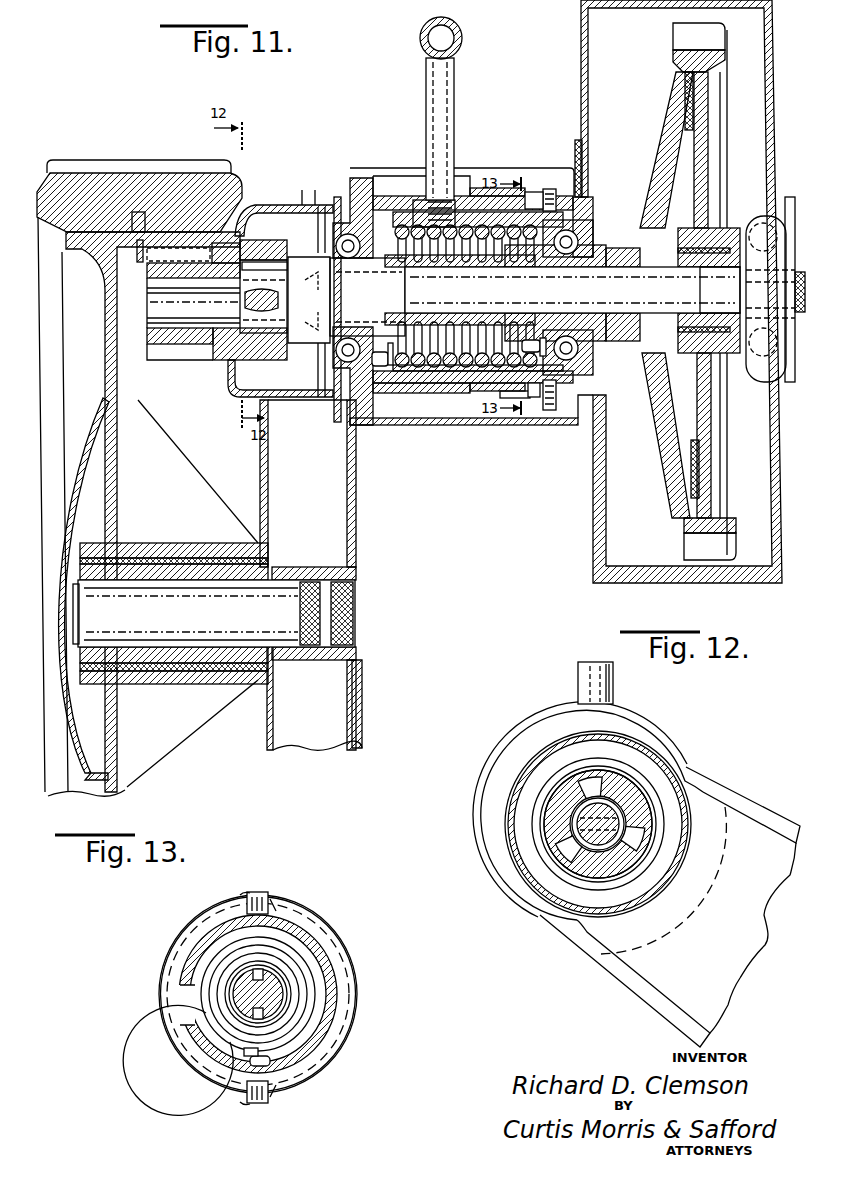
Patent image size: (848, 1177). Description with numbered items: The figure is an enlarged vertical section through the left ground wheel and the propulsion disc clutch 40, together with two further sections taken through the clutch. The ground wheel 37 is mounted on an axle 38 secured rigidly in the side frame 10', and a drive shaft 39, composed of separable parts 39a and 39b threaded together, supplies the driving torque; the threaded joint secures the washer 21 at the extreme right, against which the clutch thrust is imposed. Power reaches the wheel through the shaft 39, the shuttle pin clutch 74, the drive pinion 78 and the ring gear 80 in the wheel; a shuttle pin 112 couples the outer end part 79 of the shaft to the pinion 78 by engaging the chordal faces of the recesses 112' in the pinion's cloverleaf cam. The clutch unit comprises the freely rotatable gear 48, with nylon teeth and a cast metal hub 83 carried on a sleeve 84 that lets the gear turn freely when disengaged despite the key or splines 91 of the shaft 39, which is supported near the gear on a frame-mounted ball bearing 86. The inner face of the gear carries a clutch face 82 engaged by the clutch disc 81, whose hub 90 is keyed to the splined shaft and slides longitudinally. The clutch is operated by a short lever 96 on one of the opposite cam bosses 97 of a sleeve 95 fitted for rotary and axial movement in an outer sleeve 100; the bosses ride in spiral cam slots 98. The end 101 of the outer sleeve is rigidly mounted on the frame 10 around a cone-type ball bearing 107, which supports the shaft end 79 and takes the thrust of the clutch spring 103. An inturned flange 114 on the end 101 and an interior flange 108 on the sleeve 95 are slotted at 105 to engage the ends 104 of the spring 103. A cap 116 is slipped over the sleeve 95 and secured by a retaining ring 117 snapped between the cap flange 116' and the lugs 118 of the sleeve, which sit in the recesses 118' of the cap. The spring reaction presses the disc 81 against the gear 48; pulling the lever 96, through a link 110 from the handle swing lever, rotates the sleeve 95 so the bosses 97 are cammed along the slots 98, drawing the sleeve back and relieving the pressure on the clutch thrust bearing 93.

In FIG. 11, the frame 10 is at (541, 291).
In FIG. 11, the side frame 10' is at (339, 697).
In FIG. 12, the side frame 10' is at (671, 906).
In FIG. 11, the washer 21 is at (768, 363).
In FIG. 11, the ground wheel 37 is at (75, 185).
In FIG. 11, the axle 38 is at (280, 605).
In FIG. 11, the drive shaft 39 is at (648, 243).
In FIG. 11, the shaft part 39a is at (800, 315).
In FIG. 11, the shaft part 39b is at (622, 341).
In FIG. 13, the shaft part 39b is at (285, 1002).
In FIG. 11, the propulsion disc clutch 40 is at (478, 470).
In FIG. 12, the propulsion disc clutch 40 is at (530, 725).
In FIG. 13, the propulsion disc clutch 40 is at (343, 1092).
In FIG. 11, the gear 48 is at (686, 36).
In FIG. 11, the overrunning clutch 74 is at (271, 370).
In FIG. 12, the overrunning clutch 74 is at (533, 838).
In FIG. 11, the drive pinion 78 is at (178, 350).
In FIG. 12, the drive pinion 78 is at (639, 785).
In FIG. 11, the outer end part of shaft 79 is at (265, 280).
In FIG. 12, the outer end part of shaft 79 is at (563, 800).
In FIG. 11, the ring gear 80 is at (137, 255).
In FIG. 11, the clutch disc 81 is at (660, 165).
In FIG. 11, the clutch face 82 is at (695, 104).
In FIG. 11, the hub 83 is at (708, 238).
In FIG. 11, the sleeve 84 is at (716, 303).
In FIG. 11, the ball bearing 86 is at (770, 236).
In FIG. 11, the hub of disc member 90 is at (612, 246).
In FIG. 13, the hub of disc member 90 is at (240, 977).
In FIG. 11, the key or splines 91 is at (626, 272).
In FIG. 13, the key or splines 91 is at (248, 1000).
In FIG. 11, the clutch thrust bearing 93 is at (568, 340).
In FIG. 11, the sleeve 95 is at (470, 392).
In FIG. 13, the sleeve 95 is at (313, 940).
In FIG. 11, the lever 96 is at (446, 125).
In FIG. 12, the lever 96 is at (585, 672).
In FIG. 11, the cam boss 97 is at (461, 194).
In FIG. 11, the cam slot 98 is at (428, 200).
In FIG. 11, the outer sleeve 100 is at (395, 186).
In FIG. 11, the end of outer sleeve 101 is at (341, 420).
In FIG. 12, the end of outer sleeve 101 is at (509, 757).
In FIG. 11, the clutch spring 103 is at (442, 328).
In FIG. 13, the clutch spring 103 is at (315, 967).
In FIG. 11, the spring end 104 is at (383, 352).
In FIG. 13, the spring end 104 is at (246, 1062).
In FIG. 11, the slot 105 is at (385, 345).
In FIG. 13, the slot 105 is at (248, 1060).
In FIG. 11, the cone-type ball bearing 107 is at (336, 352).
In FIG. 11, the interior flange 108 is at (537, 258).
In FIG. 13, the interior flange 108 is at (212, 1035).
In FIG. 11, the link 110 is at (420, 40).
In FIG. 11, the shuttle pin 112 is at (233, 297).
In FIG. 12, the shuttle pin 112 is at (632, 824).
In FIG. 11, the recess 112' is at (265, 242).
In FIG. 12, the recess 112' is at (616, 825).
In FIG. 11, the inturned flange 114 is at (383, 258).
In FIG. 11, the cap 116 is at (496, 296).
In FIG. 13, the cap 116 is at (278, 994).
In FIG. 11, the cap flange 116' is at (508, 431).
In FIG. 13, the cap flange 116' is at (263, 976).
In FIG. 11, the retaining ring 117 is at (535, 398).
In FIG. 13, the retaining ring 117 is at (240, 897).
In FIG. 11, the lug 118 is at (561, 286).
In FIG. 13, the lug 118 is at (271, 999).
In FIG. 11, the recess 118' is at (520, 172).
In FIG. 13, the recess 118' is at (296, 995).